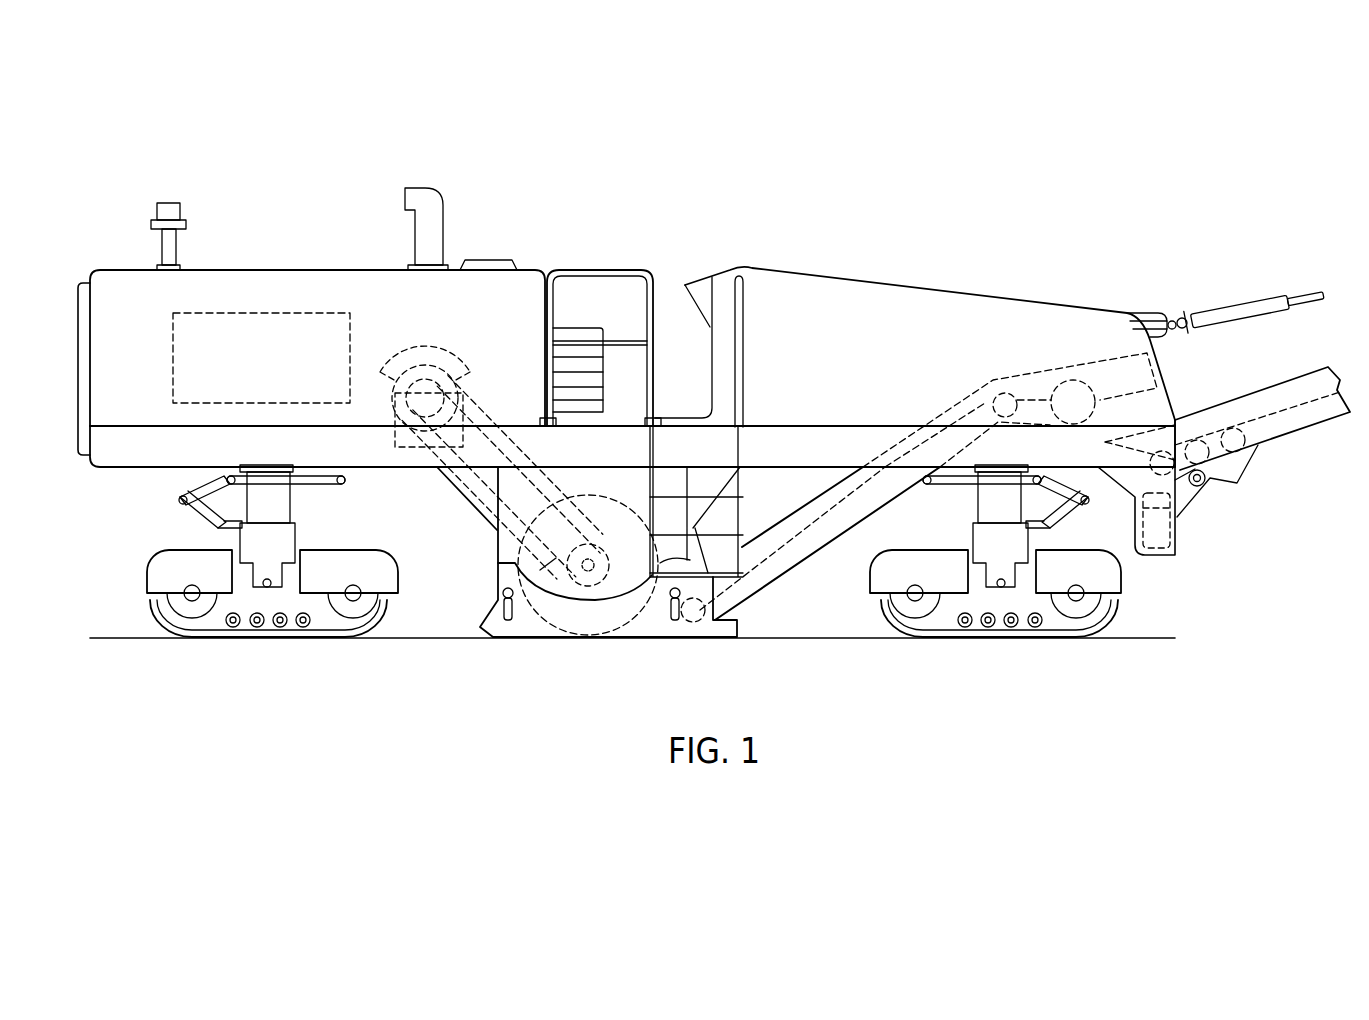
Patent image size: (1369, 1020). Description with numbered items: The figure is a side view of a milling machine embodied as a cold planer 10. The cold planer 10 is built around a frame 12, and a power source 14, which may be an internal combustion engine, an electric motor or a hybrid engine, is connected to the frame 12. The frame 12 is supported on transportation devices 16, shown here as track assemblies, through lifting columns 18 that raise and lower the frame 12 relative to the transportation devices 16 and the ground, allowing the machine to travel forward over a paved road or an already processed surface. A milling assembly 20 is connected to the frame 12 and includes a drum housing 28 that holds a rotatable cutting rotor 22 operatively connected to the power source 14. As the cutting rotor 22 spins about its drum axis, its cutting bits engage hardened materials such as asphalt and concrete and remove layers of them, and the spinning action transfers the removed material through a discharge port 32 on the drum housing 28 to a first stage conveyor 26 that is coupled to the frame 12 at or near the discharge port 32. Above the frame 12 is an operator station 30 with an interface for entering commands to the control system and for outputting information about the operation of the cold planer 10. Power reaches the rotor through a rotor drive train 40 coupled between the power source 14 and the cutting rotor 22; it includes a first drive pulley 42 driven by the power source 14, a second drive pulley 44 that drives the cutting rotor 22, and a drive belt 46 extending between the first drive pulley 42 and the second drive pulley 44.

The cold planer 10 is at (1209, 218).
The frame 12 is at (100, 470).
The power source 14 is at (258, 313).
The transportation devices 16 is at (158, 610).
The lifting columns 18 is at (290, 500).
The milling assembly 20 is at (489, 581).
The cutting rotor 22 is at (638, 610).
The first stage conveyor 26 is at (790, 570).
The drum housing 28 is at (603, 478).
The operator station 30 is at (673, 290).
The discharge port 32 is at (748, 588).
The rotor drive train 40 is at (473, 482).
The first drive pulley 42 is at (431, 396).
The second drive pulley 44 is at (586, 571).
The drive belt 46 is at (548, 563).